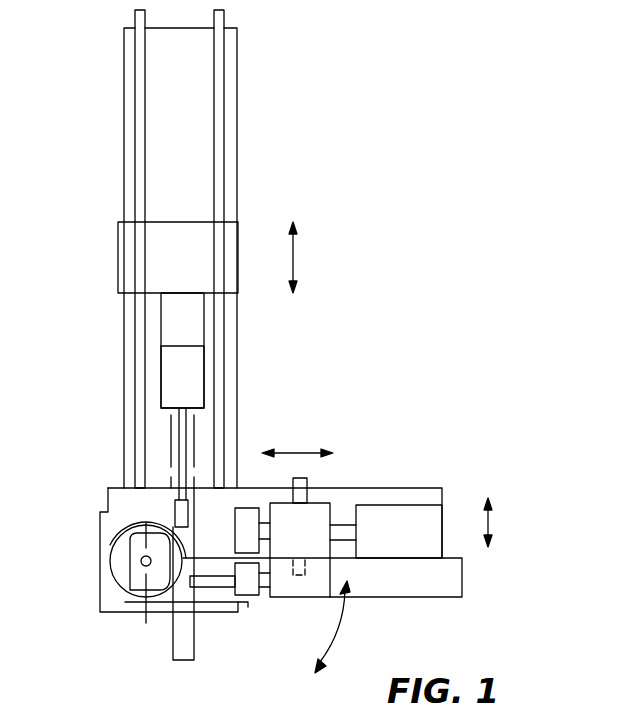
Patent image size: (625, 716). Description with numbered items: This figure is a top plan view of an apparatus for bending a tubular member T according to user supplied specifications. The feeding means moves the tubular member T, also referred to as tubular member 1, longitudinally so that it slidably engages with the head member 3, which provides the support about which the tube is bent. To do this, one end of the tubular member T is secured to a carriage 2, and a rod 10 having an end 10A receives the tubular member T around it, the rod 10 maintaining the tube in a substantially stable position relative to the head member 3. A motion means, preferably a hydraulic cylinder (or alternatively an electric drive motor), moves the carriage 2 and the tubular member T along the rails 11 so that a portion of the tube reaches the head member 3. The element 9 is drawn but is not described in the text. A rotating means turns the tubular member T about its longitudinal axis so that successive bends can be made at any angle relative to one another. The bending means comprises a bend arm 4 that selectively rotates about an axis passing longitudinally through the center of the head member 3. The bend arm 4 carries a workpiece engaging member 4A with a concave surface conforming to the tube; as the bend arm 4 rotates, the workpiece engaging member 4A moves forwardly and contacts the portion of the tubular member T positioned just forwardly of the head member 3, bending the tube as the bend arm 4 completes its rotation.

The tubular member 1 is at (223, 244).
The carriage 2 is at (188, 320).
The head member 3 is at (137, 575).
The bend arm 4 is at (305, 593).
The workpiece engaging member 4A is at (251, 588).
The piston 9 is at (188, 368).
The rod 10 is at (178, 438).
The end of rod 10A is at (175, 508).
The rails 11 is at (141, 110).
The tubular member T is at (188, 650).